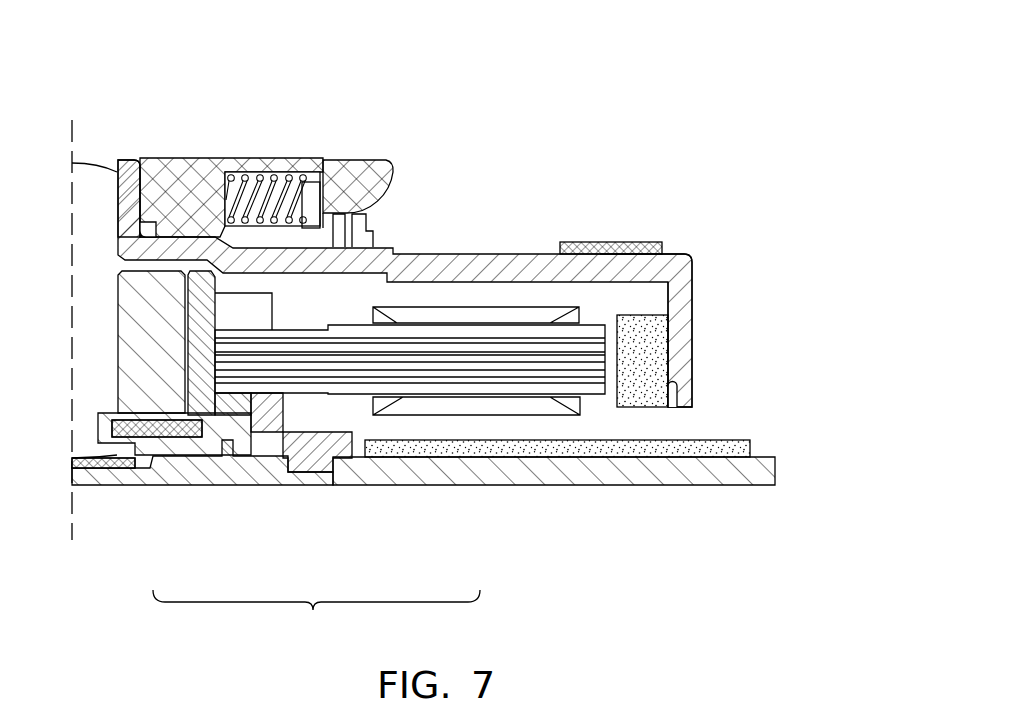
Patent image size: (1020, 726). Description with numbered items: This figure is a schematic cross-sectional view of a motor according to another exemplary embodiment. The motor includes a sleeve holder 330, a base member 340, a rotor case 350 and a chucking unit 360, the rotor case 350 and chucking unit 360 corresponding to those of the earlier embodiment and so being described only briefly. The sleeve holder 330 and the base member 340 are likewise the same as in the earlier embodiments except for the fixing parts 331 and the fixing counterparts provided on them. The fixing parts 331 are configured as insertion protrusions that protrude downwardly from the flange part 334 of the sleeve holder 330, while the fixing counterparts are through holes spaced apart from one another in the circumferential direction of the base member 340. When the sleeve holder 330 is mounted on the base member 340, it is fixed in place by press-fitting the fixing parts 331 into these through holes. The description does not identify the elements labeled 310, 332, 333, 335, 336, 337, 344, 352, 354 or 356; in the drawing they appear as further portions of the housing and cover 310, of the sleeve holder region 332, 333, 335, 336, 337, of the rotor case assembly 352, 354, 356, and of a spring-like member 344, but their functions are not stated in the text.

The cover window 310 is at (90, 172).
The sleeve holder 330 is at (316, 615).
The fixing part 331 is at (268, 378).
The lens barrel block 332 is at (187, 330).
The holder 333 is at (265, 430).
The flange part 334 is at (347, 460).
The support 335 is at (252, 400).
The bottom frame 336 is at (140, 460).
The spacer bar 337 is at (210, 378).
The base member 340 is at (643, 477).
The spring 344 is at (228, 438).
The rotor case 350 is at (390, 252).
The coil 352 is at (663, 365).
The side wall 354 is at (128, 160).
The housing side wall 356 is at (686, 307).
The chucking unit 360 is at (193, 158).